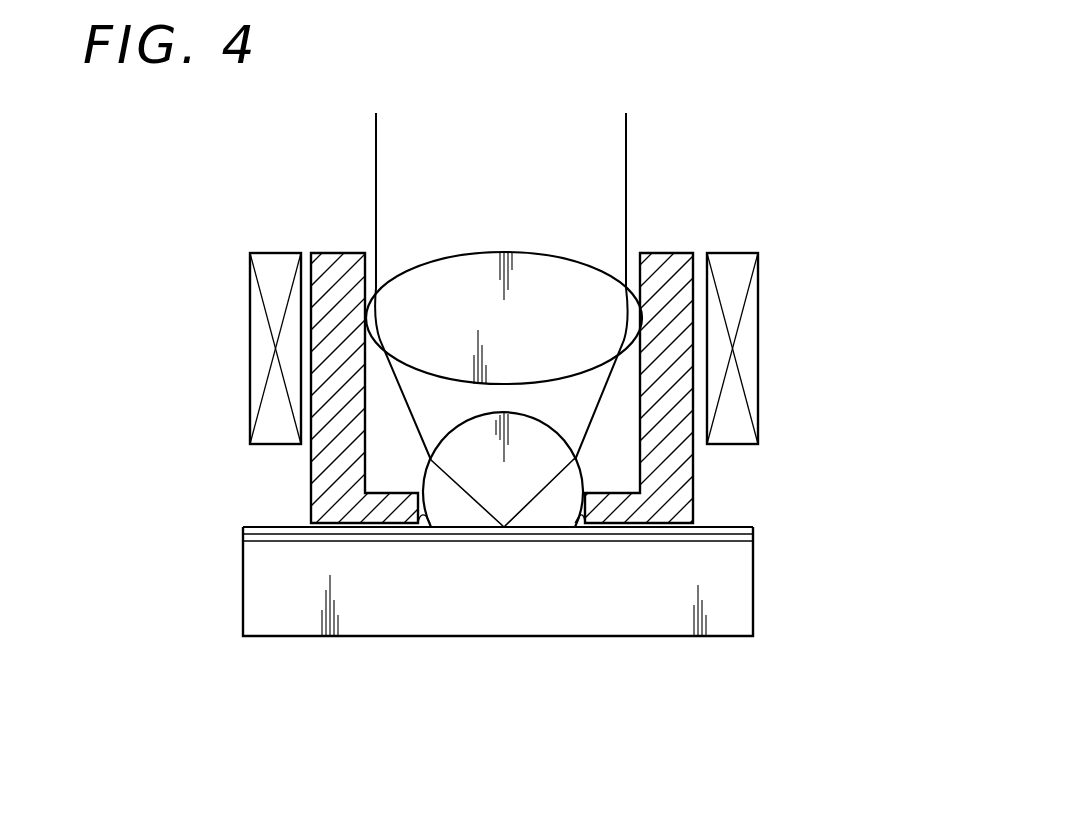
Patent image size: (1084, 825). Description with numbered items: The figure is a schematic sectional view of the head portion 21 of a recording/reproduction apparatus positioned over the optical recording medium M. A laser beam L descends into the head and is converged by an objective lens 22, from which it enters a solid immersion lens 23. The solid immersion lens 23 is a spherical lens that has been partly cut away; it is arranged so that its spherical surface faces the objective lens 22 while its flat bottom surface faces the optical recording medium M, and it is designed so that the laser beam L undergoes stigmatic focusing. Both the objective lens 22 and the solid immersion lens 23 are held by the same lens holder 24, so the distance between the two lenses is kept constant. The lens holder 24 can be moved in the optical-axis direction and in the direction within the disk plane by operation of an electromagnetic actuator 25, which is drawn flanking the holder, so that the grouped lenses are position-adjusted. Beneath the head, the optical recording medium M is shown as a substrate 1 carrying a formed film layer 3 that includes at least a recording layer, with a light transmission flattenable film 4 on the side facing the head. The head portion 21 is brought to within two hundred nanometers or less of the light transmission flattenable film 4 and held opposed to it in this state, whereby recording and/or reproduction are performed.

The substrate 1 is at (553, 618).
The formed film layer 3 is at (727, 540).
The light transmission flattenable film 4 is at (740, 530).
The head portion 21 is at (744, 158).
The objective lens 22 is at (493, 254).
The solid immersion lens 23 is at (457, 512).
The lens holder 24 is at (320, 482).
The electromagnetic actuator 25 is at (255, 308).
The laser beam L is at (626, 125).
The optical recording medium M is at (804, 677).